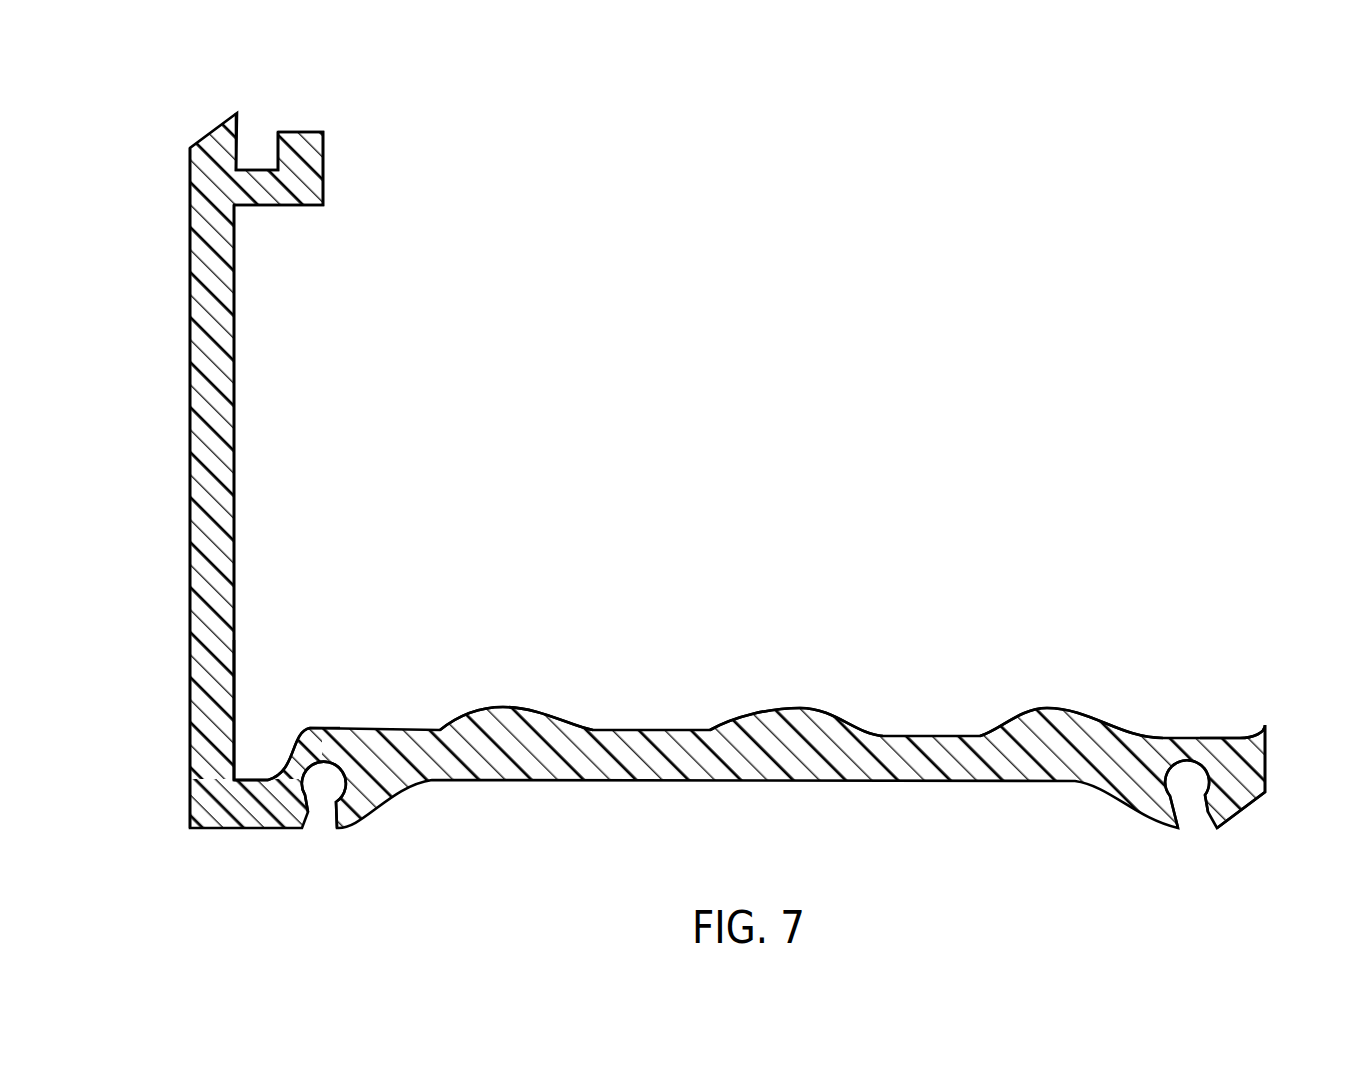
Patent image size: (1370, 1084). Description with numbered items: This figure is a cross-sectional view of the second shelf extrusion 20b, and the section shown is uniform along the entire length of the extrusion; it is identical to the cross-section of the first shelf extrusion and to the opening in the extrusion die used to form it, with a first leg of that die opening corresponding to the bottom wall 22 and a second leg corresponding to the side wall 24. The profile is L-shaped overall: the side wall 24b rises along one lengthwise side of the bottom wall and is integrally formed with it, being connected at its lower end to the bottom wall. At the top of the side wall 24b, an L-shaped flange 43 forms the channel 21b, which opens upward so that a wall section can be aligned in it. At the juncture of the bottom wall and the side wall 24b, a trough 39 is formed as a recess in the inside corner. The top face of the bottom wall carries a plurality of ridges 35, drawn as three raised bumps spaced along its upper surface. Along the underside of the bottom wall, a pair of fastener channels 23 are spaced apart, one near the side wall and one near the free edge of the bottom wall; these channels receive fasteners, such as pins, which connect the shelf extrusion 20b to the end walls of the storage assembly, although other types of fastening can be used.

The second shelf extrusion 20b is at (788, 417).
The channel 21b is at (263, 132).
The L-shaped flange 43 is at (325, 178).
The side wall 24 is at (248, 446).
The side wall 24b is at (246, 673).
The trough 39 is at (266, 726).
The ridges 35 is at (523, 707).
The bottom wall 22 is at (1273, 714).
The fastener channels 23 is at (323, 790).